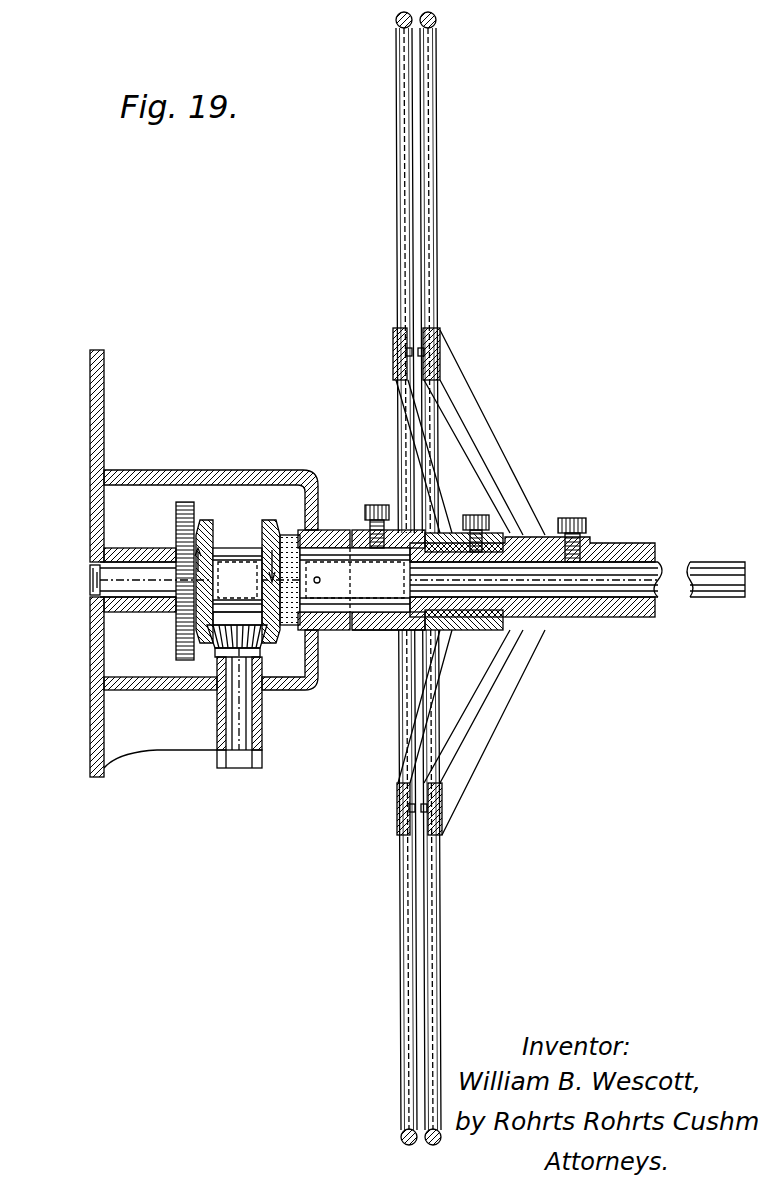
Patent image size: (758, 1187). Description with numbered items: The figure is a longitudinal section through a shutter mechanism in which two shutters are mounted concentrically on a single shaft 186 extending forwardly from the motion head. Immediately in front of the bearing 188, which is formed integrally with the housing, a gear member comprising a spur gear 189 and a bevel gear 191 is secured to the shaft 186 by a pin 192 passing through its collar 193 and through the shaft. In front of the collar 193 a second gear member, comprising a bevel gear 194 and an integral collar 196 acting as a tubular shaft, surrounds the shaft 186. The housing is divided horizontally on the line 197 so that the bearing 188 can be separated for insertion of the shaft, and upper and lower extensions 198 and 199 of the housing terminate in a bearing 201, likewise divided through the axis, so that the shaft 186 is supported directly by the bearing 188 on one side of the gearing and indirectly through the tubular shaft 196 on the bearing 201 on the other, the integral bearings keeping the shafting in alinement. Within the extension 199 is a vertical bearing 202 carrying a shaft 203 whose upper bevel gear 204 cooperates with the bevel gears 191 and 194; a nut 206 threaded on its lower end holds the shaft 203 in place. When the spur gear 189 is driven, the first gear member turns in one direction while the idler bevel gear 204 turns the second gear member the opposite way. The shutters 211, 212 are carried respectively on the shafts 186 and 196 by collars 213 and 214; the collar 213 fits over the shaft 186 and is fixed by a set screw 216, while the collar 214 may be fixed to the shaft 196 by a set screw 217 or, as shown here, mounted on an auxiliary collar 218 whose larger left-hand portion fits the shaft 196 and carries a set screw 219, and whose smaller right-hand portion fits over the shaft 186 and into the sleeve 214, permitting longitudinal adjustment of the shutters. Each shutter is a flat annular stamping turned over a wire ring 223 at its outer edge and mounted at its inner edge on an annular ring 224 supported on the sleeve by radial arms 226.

The shaft 186 is at (100, 585).
The bearing 188 is at (136, 548).
The spur gear 189 is at (186, 502).
The bevel gear 191 is at (206, 545).
The pin 192 is at (278, 508).
The collar 193 is at (238, 577).
The bevel gear 194 is at (300, 555).
The collar 196 is at (332, 548).
The line 197 is at (92, 572).
The extension 198 is at (158, 470).
The extension 199 is at (140, 690).
The bearing 201 is at (327, 630).
The vertical bearing 202 is at (260, 748).
The shaft 203 is at (233, 728).
The bevel gear 204 is at (264, 695).
The nut 206 is at (238, 770).
The shutter 211 is at (437, 20).
The shutter 212 is at (397, 18).
The collar 213 is at (535, 540).
The collar 214 is at (490, 537).
The set screw 216 is at (586, 522).
The set screw 217 is at (480, 515).
The auxiliary collar 218 is at (397, 632).
The set screw 219 is at (378, 505).
The ring 223 is at (431, 30).
The annular ring 224 is at (441, 336).
The radial arms 226 is at (465, 398).